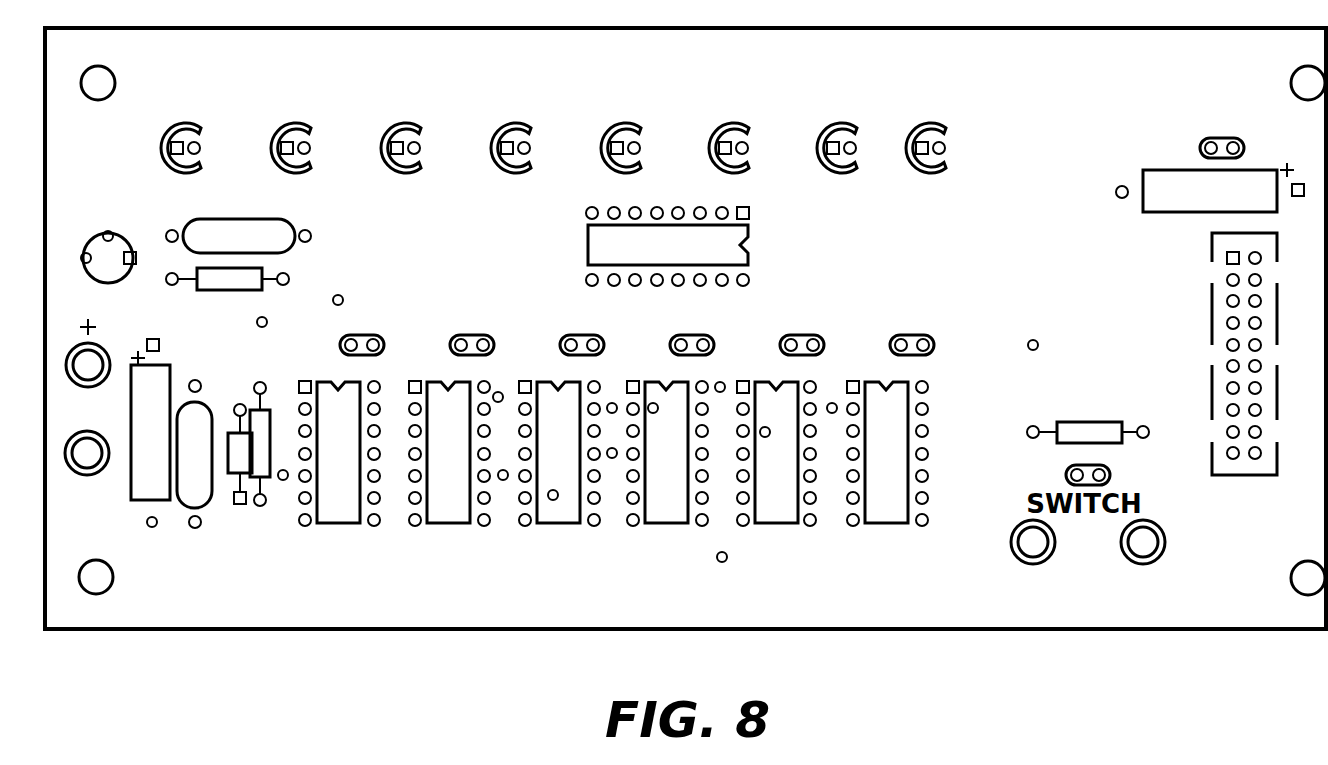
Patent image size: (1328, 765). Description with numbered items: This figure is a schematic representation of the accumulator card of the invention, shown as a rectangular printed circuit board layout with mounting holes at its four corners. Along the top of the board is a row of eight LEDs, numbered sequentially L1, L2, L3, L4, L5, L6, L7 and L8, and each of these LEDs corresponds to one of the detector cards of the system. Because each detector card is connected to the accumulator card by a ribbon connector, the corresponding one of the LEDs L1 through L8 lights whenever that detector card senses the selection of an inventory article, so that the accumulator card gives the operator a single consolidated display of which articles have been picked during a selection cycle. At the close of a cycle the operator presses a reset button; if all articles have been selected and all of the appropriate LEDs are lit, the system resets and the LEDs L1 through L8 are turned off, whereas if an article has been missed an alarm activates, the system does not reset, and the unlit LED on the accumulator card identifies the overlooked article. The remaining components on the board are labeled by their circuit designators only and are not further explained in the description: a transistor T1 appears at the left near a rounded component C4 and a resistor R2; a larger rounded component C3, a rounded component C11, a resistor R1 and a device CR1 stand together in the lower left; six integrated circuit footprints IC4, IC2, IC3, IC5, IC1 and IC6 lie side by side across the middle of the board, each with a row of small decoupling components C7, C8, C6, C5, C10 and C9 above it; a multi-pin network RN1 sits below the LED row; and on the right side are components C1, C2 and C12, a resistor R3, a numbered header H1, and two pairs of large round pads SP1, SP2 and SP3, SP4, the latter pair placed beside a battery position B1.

The LED L1 is at (182, 132).
The LED L2 is at (292, 132).
The LED L3 is at (402, 132).
The LED L4 is at (512, 132).
The LED L5 is at (622, 132).
The LED L6 is at (730, 132).
The LED L7 is at (838, 132).
The LED L8 is at (927, 132).
The transistor T1 is at (108, 240).
The capacitor C1 is at (1222, 132).
The capacitor C2 is at (1213, 172).
The capacitor C3 is at (150, 455).
The capacitor C4 is at (264, 236).
The capacitor C5 is at (692, 329).
The capacitor C6 is at (582, 329).
The capacitor C7 is at (362, 329).
The capacitor C8 is at (472, 329).
The capacitor C9 is at (912, 329).
The capacitor C10 is at (801, 329).
The capacitor C11 is at (194, 480).
The capacitor C12 is at (1118, 468).
The resistor R1 is at (261, 474).
The resistor R2 is at (255, 280).
The resistor R3 is at (1088, 414).
The resistor network RN1 is at (706, 246).
The diode CR1 is at (240, 494).
The integrated circuit IC1 is at (761, 437).
The integrated circuit IC2 is at (433, 437).
The integrated circuit IC3 is at (543, 437).
The integrated circuit IC4 is at (323, 437).
The integrated circuit IC5 is at (652, 437).
The integrated circuit IC6 is at (873, 437).
The switch pad SP1 is at (1033, 563).
The switch pad SP2 is at (1143, 563).
The battery terminal pad SP3 is at (88, 340).
The battery terminal pad SP4 is at (87, 472).
The battery B1 is at (87, 403).
The header connector H1 is at (1241, 376).